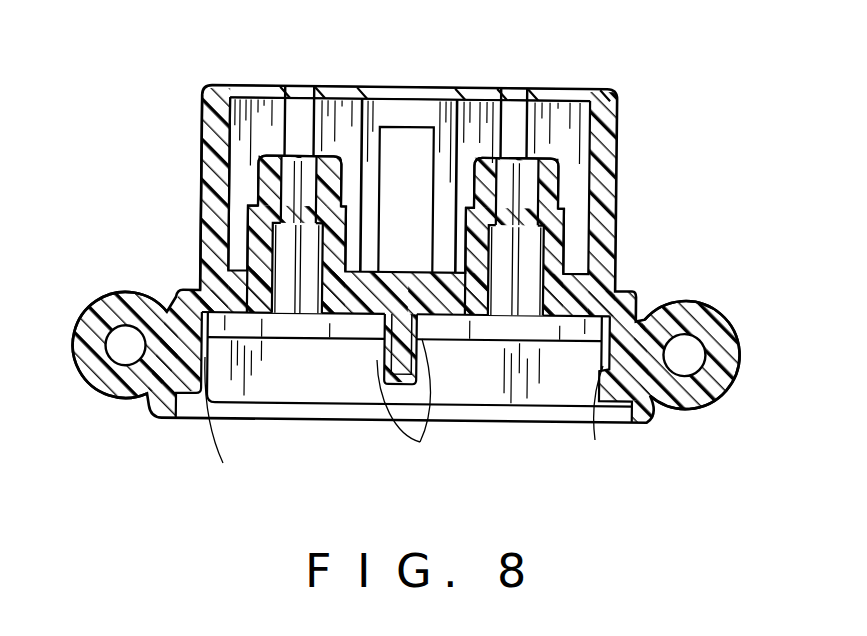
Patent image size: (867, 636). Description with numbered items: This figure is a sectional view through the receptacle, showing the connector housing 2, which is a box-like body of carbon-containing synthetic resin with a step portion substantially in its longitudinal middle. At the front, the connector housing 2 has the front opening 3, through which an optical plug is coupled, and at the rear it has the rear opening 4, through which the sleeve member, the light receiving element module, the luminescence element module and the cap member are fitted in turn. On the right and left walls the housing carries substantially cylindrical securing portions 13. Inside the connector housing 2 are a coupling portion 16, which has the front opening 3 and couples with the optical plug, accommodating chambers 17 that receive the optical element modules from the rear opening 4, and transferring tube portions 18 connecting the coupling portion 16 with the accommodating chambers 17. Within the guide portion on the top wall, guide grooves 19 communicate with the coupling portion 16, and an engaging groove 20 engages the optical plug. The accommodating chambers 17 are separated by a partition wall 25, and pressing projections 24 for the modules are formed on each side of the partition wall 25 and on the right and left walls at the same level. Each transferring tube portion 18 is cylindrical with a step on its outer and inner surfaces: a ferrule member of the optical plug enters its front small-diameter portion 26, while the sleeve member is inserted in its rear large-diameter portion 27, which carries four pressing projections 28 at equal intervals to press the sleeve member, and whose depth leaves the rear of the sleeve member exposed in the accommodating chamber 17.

The connector housing 2 is at (587, 72).
The front opening 3 is at (247, 84).
The rear opening 4 is at (611, 422).
The securing portion 13 is at (717, 312).
The coupling portion 16 is at (247, 122).
The accommodating chamber 17 is at (320, 377).
The transferring tube portion 18 is at (405, 208).
The guide groove 19 is at (307, 123).
The engaging groove 20 is at (449, 122).
The pressing projection 24 is at (410, 422).
The partition wall 25 is at (440, 339).
The front small-diameter portion 26 is at (258, 174).
The rear large-diameter portion 27 is at (250, 233).
The pressing projection 28 is at (247, 254).